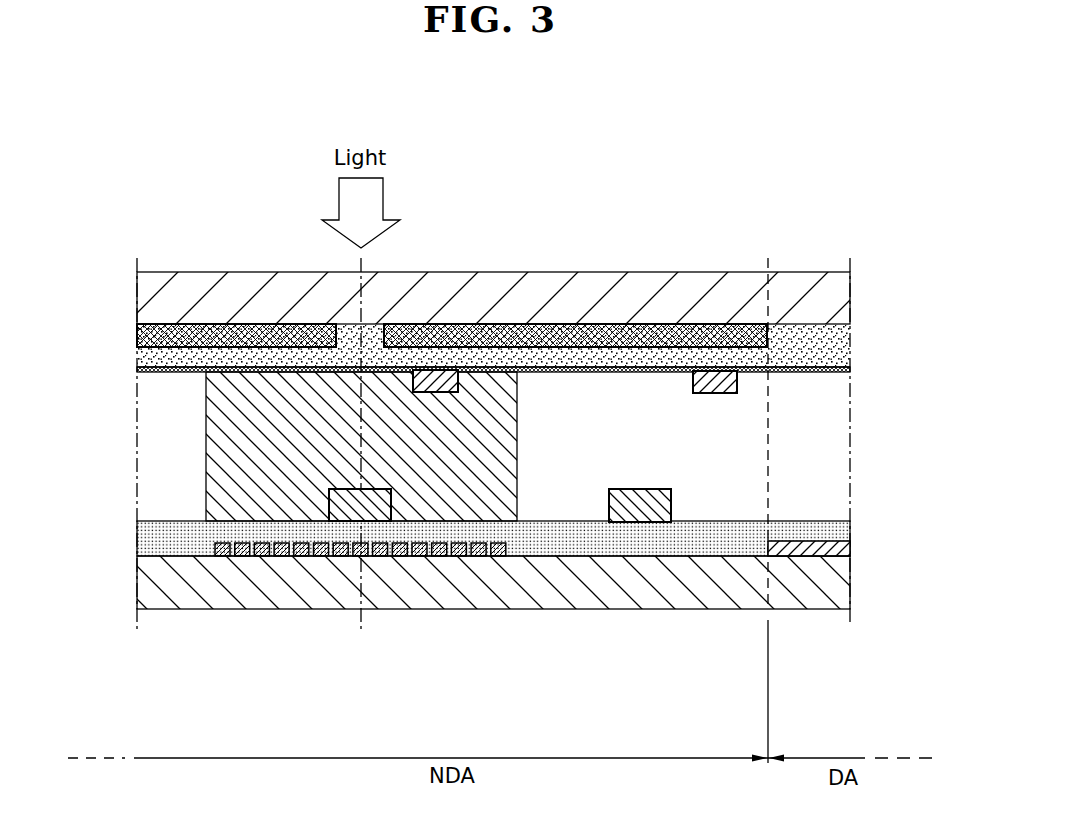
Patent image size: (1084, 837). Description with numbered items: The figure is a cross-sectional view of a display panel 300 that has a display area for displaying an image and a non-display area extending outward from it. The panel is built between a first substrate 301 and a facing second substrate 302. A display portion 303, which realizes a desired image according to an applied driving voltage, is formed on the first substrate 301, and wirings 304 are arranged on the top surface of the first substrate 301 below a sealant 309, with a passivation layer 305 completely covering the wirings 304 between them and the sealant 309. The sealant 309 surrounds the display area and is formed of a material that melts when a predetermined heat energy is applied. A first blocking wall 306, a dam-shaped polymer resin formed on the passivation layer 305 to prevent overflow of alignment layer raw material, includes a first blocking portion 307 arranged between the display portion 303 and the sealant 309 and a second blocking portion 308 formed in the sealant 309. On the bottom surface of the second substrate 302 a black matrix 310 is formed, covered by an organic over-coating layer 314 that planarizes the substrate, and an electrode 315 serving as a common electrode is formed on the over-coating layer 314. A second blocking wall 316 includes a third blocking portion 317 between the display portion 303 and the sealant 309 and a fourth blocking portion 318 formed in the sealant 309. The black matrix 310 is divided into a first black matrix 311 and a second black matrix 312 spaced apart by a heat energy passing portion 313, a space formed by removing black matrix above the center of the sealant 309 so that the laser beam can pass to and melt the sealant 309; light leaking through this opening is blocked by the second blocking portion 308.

The display panel 300 is at (148, 185).
The first substrate 301 is at (838, 590).
The second substrate 302 is at (833, 296).
The display portion 303 is at (838, 548).
The wirings 304 is at (282, 556).
The passivation layer 305 is at (838, 531).
The first blocking wall 306 is at (500, 601).
The first blocking portion 307 is at (638, 580).
The second blocking portion 308 is at (375, 510).
The sealant 309 is at (205, 467).
The black matrix 310 is at (486, 283).
The first black matrix 311 is at (522, 278).
The second black matrix 312 is at (218, 324).
The heat energy passing portion 313 is at (373, 328).
The over-coating layer 314 is at (833, 350).
The electrode 315 is at (850, 370).
The second blocking wall 316 is at (575, 283).
The third blocking portion 317 is at (683, 305).
The fourth blocking portion 318 is at (462, 370).